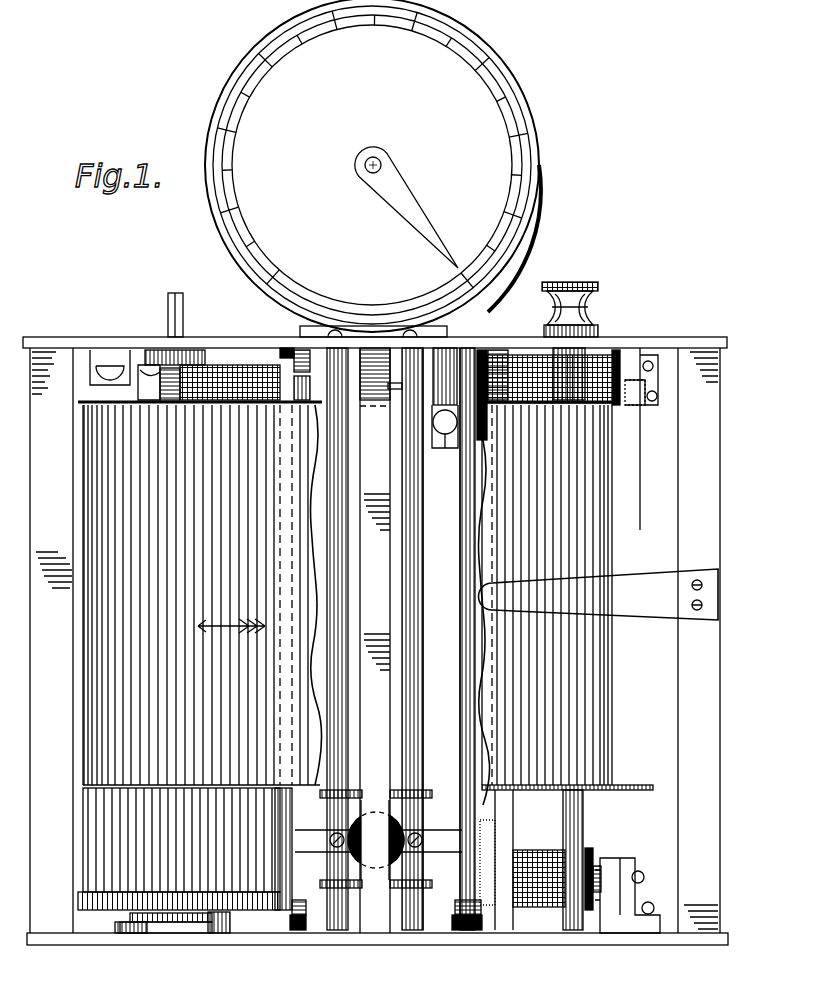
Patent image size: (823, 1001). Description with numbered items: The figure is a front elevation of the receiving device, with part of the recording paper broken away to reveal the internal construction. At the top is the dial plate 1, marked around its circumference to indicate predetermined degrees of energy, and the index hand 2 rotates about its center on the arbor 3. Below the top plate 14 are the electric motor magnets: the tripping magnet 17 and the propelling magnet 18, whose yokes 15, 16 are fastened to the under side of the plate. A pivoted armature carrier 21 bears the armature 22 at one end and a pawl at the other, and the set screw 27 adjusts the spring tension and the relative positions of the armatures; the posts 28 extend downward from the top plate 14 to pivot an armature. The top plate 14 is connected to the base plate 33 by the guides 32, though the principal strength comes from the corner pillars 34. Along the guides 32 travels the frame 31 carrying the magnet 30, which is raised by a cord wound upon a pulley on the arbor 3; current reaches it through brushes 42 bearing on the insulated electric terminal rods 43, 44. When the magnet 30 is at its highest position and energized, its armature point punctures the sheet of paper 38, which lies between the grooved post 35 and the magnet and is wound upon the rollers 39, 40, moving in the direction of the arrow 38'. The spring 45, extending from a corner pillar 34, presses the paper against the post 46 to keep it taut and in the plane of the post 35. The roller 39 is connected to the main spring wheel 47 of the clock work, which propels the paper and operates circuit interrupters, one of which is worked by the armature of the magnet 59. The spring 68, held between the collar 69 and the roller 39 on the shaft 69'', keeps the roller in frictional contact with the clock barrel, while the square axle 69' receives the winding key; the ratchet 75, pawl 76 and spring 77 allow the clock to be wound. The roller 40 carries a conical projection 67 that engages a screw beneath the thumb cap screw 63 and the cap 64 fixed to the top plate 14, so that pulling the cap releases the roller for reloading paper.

The dial plate 1 is at (373, 168).
The index hand 2 is at (406, 207).
The arbor 3 is at (381, 160).
The top plate 14 is at (630, 346).
The yoke of magnet 15 is at (633, 390).
The yoke of magnet 16 is at (159, 384).
The tripping magnet 17 is at (238, 364).
The propelling magnet 18 is at (525, 360).
The armature carrier 21 is at (312, 363).
The armature 22 is at (312, 388).
The set screw 27 is at (390, 400).
The posts 28 is at (443, 442).
The magnet 30 is at (404, 824).
The frame 31 is at (432, 890).
The guides 32 is at (392, 639).
The base plate 33 is at (462, 945).
The corner pillars 34 is at (375, 640).
The post 35 is at (375, 640).
The sheet of paper 38 is at (207, 593).
The arrow 38' is at (231, 640).
The roller 39 is at (110, 375).
The roller 40 is at (635, 406).
The brushes 42 is at (437, 845).
The electric terminal rod 43 is at (292, 878).
The electric terminal rod 44 is at (443, 436).
The spring 45 is at (598, 594).
The post 46 is at (508, 860).
The main spring wheel 47 is at (185, 849).
The magnet 59 is at (539, 867).
The thumb cap screw 63 is at (598, 286).
The cap 64 is at (600, 320).
The conical projection 67 is at (572, 826).
The spring 68 is at (160, 362).
The collar 69 is at (190, 339).
The square axle 69' is at (197, 301).
The shaft 69'' is at (122, 336).
The ratchet 75 is at (138, 933).
The pawl 76 is at (218, 933).
The spring 77 is at (176, 933).